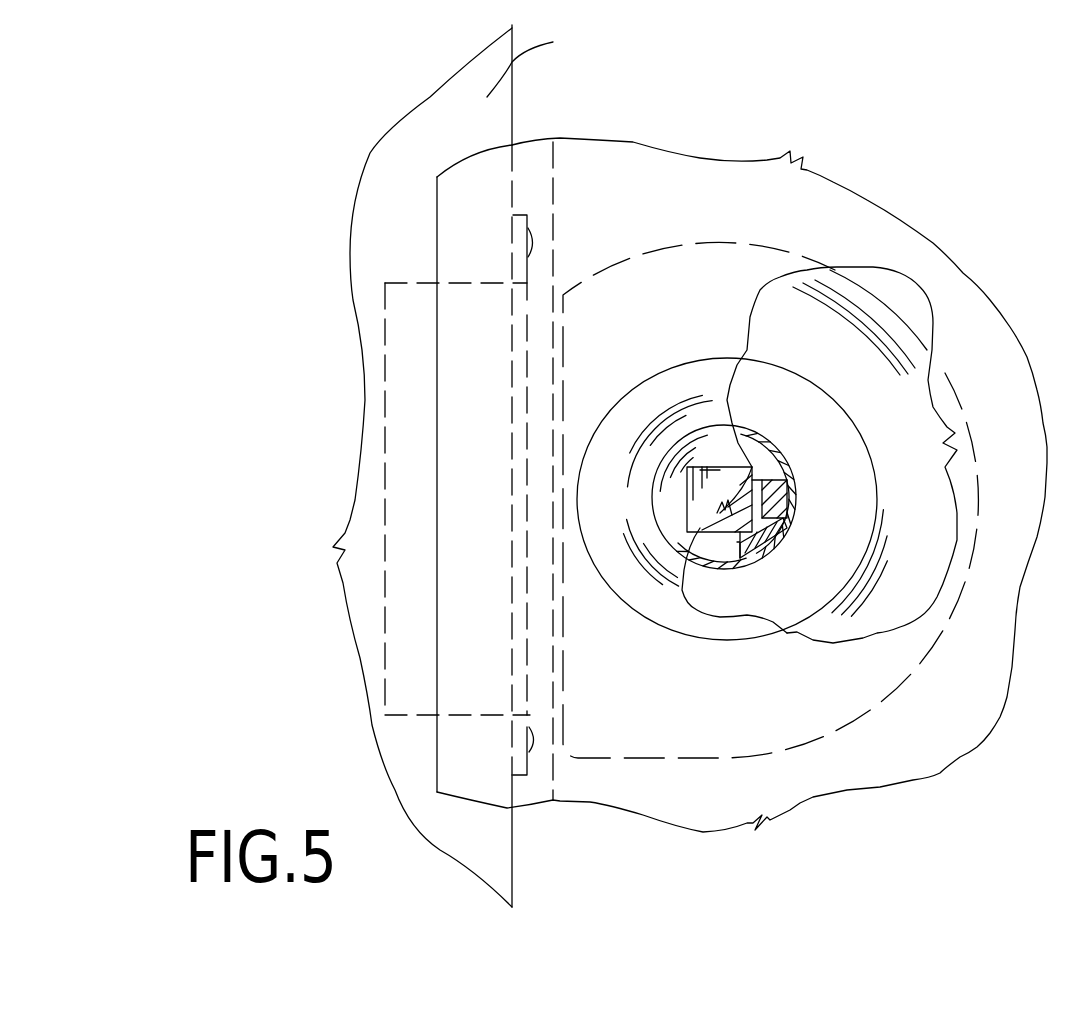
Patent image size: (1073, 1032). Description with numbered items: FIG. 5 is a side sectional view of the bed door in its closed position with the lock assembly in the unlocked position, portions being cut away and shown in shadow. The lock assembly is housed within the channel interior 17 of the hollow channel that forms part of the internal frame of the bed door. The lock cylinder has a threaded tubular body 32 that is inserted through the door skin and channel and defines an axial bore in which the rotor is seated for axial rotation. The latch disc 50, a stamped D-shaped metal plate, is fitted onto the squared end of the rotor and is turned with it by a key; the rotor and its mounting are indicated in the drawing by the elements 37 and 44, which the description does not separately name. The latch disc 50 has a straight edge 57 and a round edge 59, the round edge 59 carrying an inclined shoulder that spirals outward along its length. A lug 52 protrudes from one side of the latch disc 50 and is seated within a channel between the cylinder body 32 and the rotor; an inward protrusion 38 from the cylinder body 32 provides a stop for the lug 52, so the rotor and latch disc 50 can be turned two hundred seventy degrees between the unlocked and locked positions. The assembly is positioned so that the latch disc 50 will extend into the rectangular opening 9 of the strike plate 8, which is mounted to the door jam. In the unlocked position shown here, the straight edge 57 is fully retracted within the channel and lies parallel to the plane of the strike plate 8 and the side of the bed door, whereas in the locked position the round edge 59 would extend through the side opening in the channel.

The strike plate 8 is at (525, 272).
The rectangular opening 9 is at (522, 467).
The channel interior 17 is at (900, 293).
The threaded tubular body 32 is at (763, 461).
The knob 37 is at (762, 462).
The inward protrusion 38 is at (770, 543).
The cable 44 is at (730, 532).
The latch disc 50 is at (757, 728).
The lug 52 is at (786, 480).
The straight edge 57 is at (563, 662).
The round edge 59 is at (882, 703).